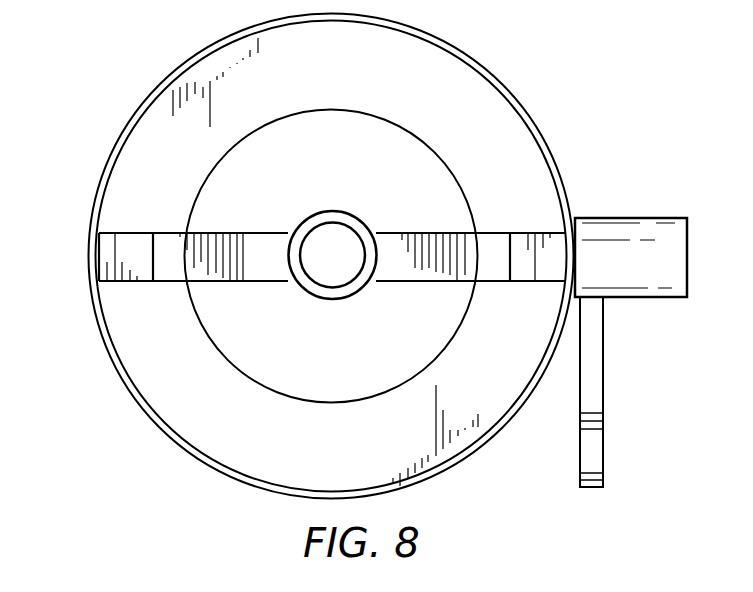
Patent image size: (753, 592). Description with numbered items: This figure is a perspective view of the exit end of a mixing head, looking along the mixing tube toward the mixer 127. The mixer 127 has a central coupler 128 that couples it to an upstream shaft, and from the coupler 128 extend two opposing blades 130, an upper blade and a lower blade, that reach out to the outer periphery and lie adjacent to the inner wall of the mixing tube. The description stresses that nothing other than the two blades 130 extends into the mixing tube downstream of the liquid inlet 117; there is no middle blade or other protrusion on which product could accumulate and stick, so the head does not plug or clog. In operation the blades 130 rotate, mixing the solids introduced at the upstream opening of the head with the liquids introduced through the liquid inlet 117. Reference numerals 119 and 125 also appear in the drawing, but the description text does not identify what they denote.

The liquid inlet 117 is at (633, 218).
The disc 119 is at (153, 421).
The support arm 125 is at (603, 435).
The mixer 127 is at (561, 266).
The central coupler 128 is at (345, 212).
The blades 130 is at (130, 252).